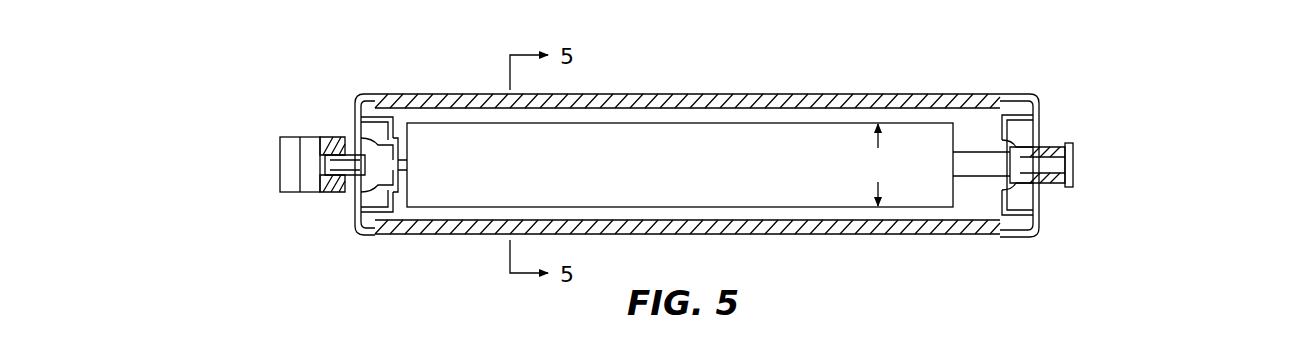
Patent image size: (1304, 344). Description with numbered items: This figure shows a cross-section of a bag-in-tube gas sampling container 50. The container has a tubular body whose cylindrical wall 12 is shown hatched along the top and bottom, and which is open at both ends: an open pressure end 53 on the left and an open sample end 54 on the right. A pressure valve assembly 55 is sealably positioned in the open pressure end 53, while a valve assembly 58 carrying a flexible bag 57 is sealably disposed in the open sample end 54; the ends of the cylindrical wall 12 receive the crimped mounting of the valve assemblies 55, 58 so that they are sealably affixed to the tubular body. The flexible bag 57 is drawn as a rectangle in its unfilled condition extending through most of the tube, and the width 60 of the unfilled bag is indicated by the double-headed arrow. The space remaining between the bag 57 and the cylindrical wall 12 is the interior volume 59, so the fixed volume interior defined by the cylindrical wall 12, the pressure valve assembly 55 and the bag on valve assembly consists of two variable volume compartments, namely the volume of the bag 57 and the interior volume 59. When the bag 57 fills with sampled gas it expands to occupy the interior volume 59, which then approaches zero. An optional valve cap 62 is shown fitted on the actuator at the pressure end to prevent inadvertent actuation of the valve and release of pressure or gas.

The cylindrical wall 12 is at (798, 95).
The bag-in-tube gas sampling container 50 is at (427, 82).
The pressure valve assembly 55 is at (347, 97).
The open pressure end 53 is at (362, 205).
The valve cap 62 is at (312, 147).
The flexible bag 57 is at (843, 193).
The width 60 is at (878, 165).
The interior volume 59 is at (455, 220).
The open sample end 54 is at (1032, 125).
The valve assembly 58 is at (1100, 118).